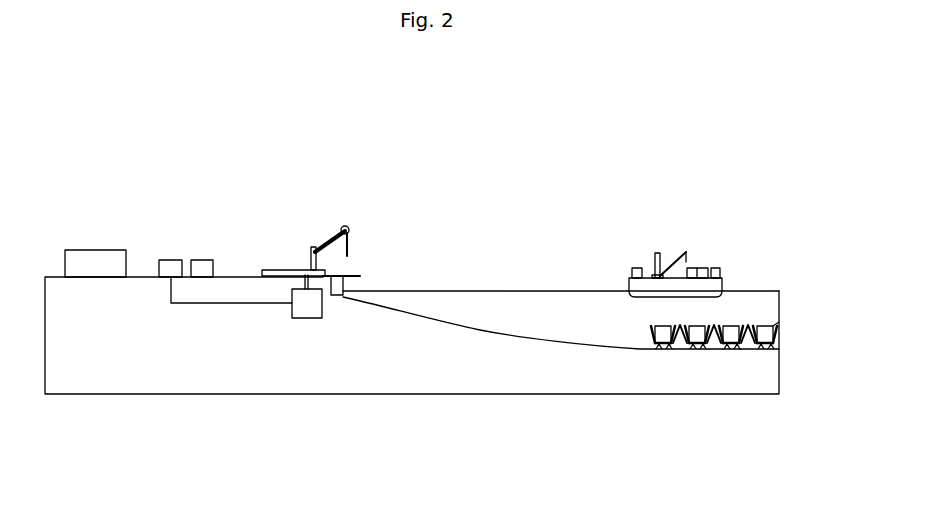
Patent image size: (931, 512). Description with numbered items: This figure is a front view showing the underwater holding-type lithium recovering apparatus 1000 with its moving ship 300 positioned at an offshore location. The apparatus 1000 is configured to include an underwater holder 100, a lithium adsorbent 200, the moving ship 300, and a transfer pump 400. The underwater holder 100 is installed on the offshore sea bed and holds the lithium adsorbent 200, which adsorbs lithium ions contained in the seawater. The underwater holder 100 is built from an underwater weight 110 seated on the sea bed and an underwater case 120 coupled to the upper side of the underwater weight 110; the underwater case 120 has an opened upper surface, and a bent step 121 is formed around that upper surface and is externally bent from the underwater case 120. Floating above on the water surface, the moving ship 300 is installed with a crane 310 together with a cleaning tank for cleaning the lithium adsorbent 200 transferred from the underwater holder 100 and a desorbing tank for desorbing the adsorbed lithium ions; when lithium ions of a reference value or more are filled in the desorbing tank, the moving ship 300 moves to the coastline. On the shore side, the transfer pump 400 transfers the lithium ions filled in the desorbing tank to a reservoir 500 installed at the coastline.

The underwater holding-type lithium recovering apparatus 1000 is at (221, 132).
The underwater holder 100 is at (683, 401).
The underwater weight 110 is at (655, 348).
The underwater case 120 is at (657, 343).
The bent step 121 is at (652, 340).
The lithium adsorbent 200 is at (775, 325).
The moving ship 300 is at (684, 233).
The crane 310 is at (656, 253).
The transfer pump 400 is at (328, 244).
The reservoir 500 is at (300, 289).